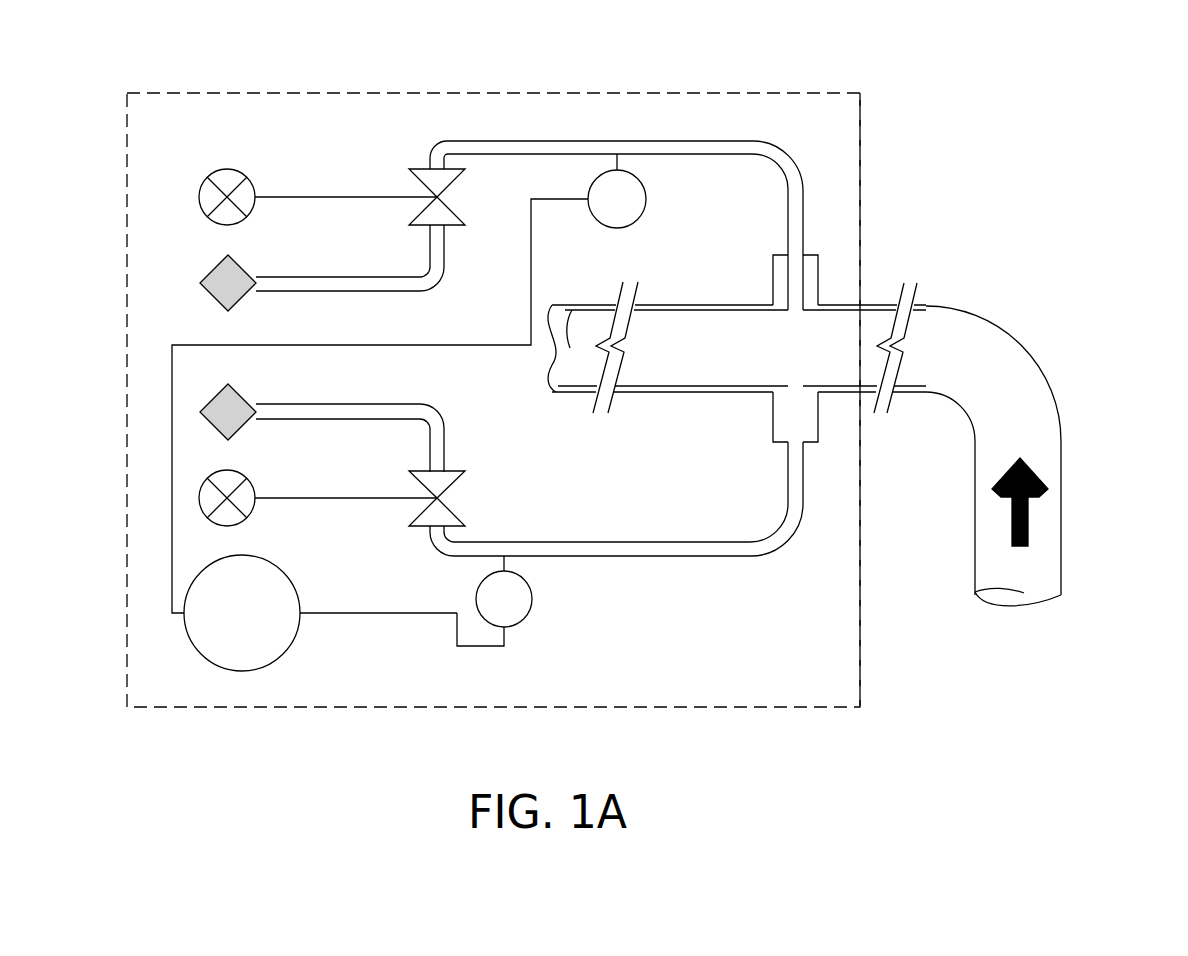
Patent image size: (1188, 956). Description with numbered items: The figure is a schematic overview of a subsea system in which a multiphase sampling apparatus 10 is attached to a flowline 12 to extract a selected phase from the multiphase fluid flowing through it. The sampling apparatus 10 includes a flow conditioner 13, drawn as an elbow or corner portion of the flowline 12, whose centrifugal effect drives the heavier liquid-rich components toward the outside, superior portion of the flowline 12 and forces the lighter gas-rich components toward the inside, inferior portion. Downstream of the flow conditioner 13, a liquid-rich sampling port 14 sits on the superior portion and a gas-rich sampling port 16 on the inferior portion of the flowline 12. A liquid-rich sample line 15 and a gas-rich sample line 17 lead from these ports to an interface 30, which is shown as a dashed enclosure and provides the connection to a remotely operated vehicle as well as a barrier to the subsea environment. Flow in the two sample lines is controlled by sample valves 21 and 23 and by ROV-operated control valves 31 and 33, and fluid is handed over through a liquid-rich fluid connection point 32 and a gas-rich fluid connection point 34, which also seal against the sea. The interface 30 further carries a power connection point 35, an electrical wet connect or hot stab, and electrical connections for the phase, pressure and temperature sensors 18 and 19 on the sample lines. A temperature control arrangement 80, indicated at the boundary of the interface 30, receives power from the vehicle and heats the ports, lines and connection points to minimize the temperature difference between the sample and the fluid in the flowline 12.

The multiphase sampling apparatus 10 is at (853, 315).
The flowline 12 is at (872, 305).
The flow conditioner 13 is at (1056, 394).
The liquid-rich sampling port 14 is at (818, 268).
The liquid-rich sample line 15 is at (710, 141).
The gas-rich sampling port 16 is at (818, 430).
The gas-rich sample line 17 is at (660, 542).
The phase, pressure and temperature sensor 18 is at (647, 200).
The phase, pressure and temperature sensor 19 is at (532, 603).
The sample valve 21 is at (416, 183).
The sample valve 23 is at (456, 510).
The interface 30 is at (213, 128).
The ROV-operated control valve 31 is at (245, 178).
The liquid-rich fluid connection point 32 is at (246, 266).
The ROV-operated control valve 33 is at (245, 478).
The gas-rich fluid connection point 34 is at (246, 395).
The power connection point 35 is at (229, 624).
The temperature control arrangement 80 is at (866, 669).